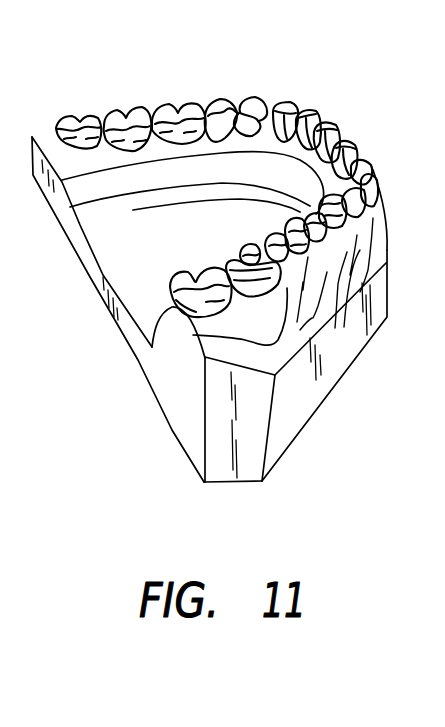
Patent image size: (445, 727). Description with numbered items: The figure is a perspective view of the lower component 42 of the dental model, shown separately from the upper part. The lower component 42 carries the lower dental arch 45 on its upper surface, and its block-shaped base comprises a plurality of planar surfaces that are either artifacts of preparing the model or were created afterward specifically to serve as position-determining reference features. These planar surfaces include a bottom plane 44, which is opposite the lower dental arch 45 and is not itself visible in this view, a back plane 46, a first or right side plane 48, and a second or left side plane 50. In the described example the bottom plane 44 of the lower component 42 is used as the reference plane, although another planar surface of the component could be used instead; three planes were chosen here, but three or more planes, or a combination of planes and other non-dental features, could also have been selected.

The second side plane 50 is at (43, 127).
The lower dental arch 45 is at (222, 150).
The back plane 46 is at (127, 333).
The first side plane 48 is at (298, 393).
The bottom plane 44 is at (222, 485).
The lower component 42 is at (259, 492).